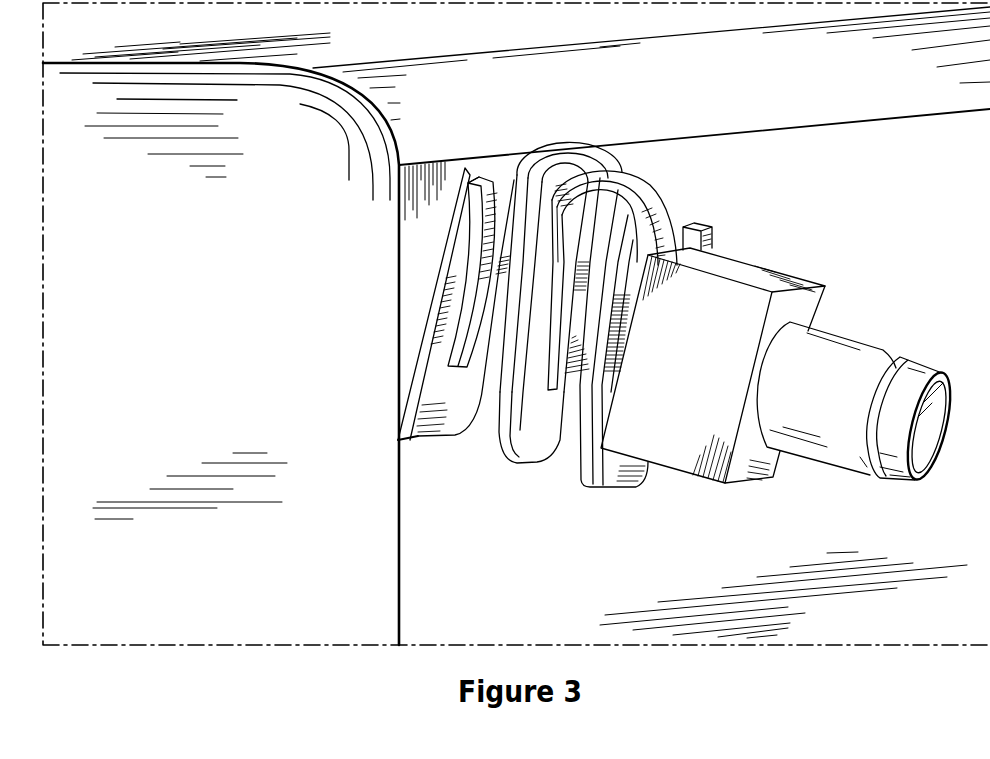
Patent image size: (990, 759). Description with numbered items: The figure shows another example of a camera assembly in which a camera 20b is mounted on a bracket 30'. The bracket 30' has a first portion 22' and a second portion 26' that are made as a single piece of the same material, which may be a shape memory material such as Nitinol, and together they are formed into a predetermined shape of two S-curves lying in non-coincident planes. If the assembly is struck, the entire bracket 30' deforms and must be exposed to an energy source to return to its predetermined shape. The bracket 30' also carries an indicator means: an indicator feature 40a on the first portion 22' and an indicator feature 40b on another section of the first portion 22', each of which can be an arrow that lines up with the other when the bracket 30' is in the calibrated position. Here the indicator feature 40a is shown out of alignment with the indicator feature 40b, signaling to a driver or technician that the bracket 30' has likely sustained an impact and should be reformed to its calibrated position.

The bracket 30' is at (548, 289).
The first portion 22' is at (631, 209).
The second portion 26' is at (531, 461).
The indicator feature 40a is at (540, 333).
The indicator feature 40b is at (604, 312).
The camera module 20b is at (838, 334).